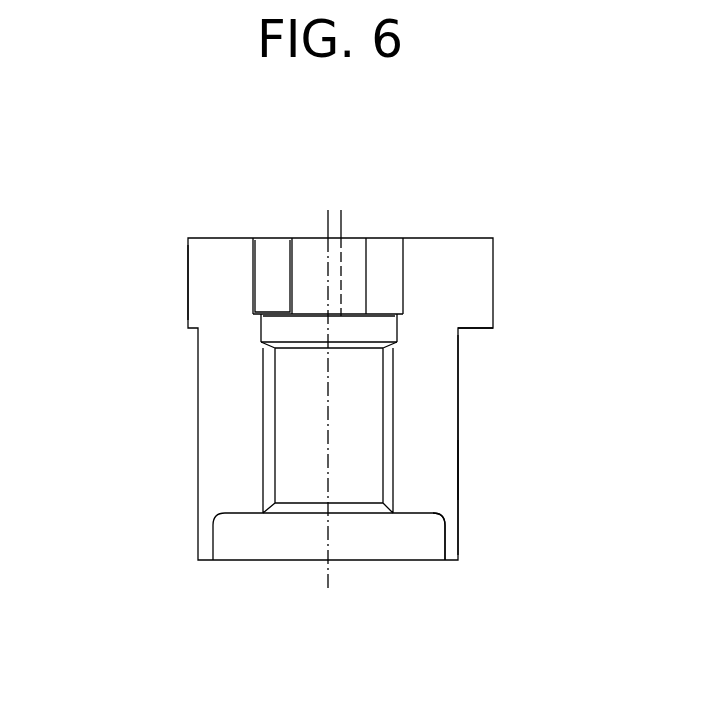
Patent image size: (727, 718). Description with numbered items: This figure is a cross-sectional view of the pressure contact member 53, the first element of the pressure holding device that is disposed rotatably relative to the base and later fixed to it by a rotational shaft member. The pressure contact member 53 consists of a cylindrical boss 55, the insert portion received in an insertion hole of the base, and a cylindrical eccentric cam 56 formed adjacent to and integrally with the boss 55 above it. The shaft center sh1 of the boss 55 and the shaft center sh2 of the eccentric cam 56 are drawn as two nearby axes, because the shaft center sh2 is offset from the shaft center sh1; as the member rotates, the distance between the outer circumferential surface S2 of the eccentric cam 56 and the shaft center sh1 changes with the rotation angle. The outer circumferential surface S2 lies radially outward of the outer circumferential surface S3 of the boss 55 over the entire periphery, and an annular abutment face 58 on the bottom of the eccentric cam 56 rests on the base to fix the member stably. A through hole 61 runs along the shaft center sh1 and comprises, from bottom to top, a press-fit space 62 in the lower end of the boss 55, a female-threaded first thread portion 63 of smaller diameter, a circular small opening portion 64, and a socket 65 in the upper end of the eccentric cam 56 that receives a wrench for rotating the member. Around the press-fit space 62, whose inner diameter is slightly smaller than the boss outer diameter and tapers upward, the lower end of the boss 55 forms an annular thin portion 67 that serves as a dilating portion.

The pressure contact member 53 is at (598, 265).
The eccentric cam 56 is at (476, 289).
The abutment face 58 is at (472, 330).
The boss 55 is at (456, 421).
The through hole 61 is at (72, 302).
The socket 65 is at (268, 288).
The small opening portion 64 is at (275, 328).
The first thread portion 63 is at (270, 417).
The press-fit space 62 is at (232, 532).
The thin portion 67 is at (452, 537).
The outer circumferential surface of the eccentric cam S2 is at (188, 268).
The outer circumferential surface of the boss S3 is at (458, 470).
The shaft center of the boss sh1 is at (326, 226).
The shaft center of the eccentric cam sh2 is at (343, 222).